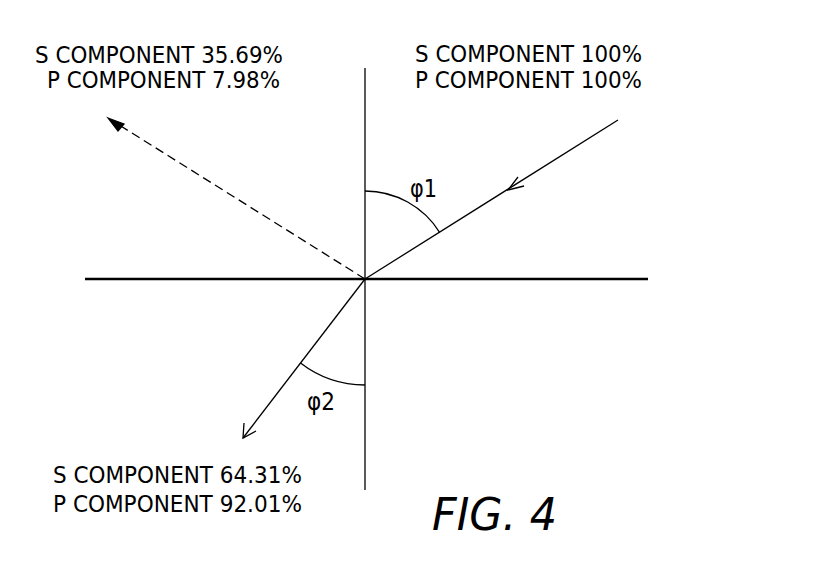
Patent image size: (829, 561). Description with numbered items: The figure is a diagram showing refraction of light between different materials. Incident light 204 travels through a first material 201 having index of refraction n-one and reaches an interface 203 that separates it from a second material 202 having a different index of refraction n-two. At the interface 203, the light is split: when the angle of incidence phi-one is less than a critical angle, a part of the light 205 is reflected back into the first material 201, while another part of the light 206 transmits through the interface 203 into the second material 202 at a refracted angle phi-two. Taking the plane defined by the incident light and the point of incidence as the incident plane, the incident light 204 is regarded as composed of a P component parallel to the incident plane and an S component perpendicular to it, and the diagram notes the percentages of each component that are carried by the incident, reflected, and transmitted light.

The material 201 is at (550, 253).
The material 202 is at (475, 373).
The interface 203 is at (588, 278).
The incident light 204 is at (545, 163).
The reflected light 205 is at (200, 177).
The transmitted light 206 is at (277, 390).